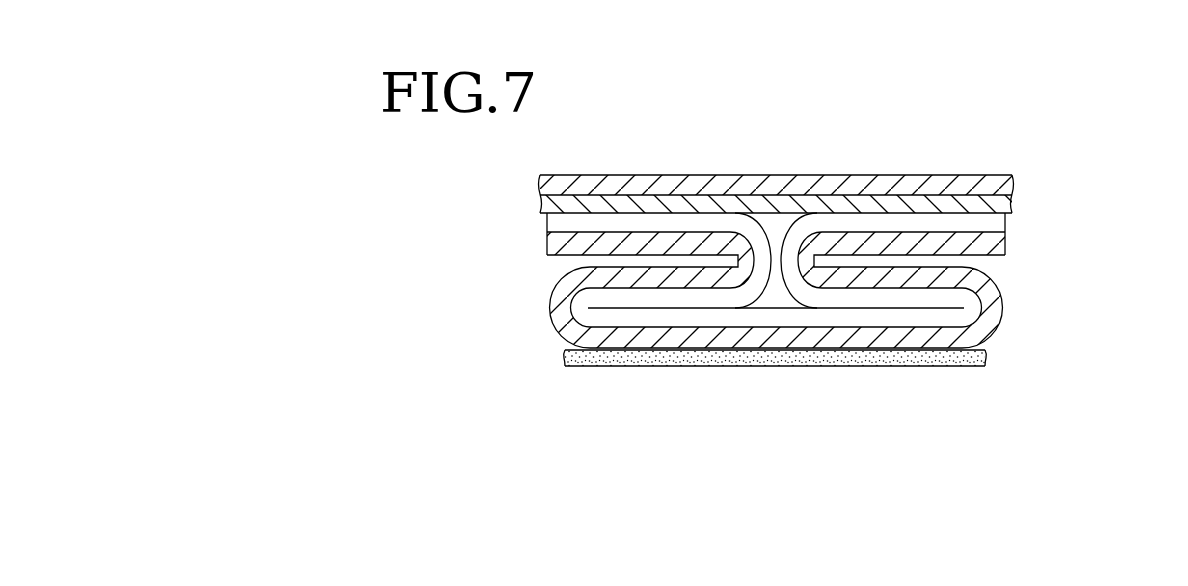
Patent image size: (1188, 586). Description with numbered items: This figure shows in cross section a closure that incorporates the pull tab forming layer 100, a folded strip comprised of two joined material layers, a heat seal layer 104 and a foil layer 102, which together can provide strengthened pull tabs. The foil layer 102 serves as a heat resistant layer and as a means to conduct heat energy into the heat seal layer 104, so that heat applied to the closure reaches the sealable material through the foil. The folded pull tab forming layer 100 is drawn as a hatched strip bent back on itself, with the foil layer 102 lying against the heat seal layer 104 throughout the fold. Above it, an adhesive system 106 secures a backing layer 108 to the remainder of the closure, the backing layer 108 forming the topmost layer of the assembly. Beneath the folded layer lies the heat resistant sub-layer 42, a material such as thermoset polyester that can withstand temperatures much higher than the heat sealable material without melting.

The pull tab forming layer 100 is at (526, 330).
The foil layer 102 is at (547, 222).
The heat seal layer 104 is at (1000, 290).
The adhesive system 106 is at (1003, 204).
The backing layer 108 is at (968, 178).
The heat resistant sub-layer 42 is at (775, 367).